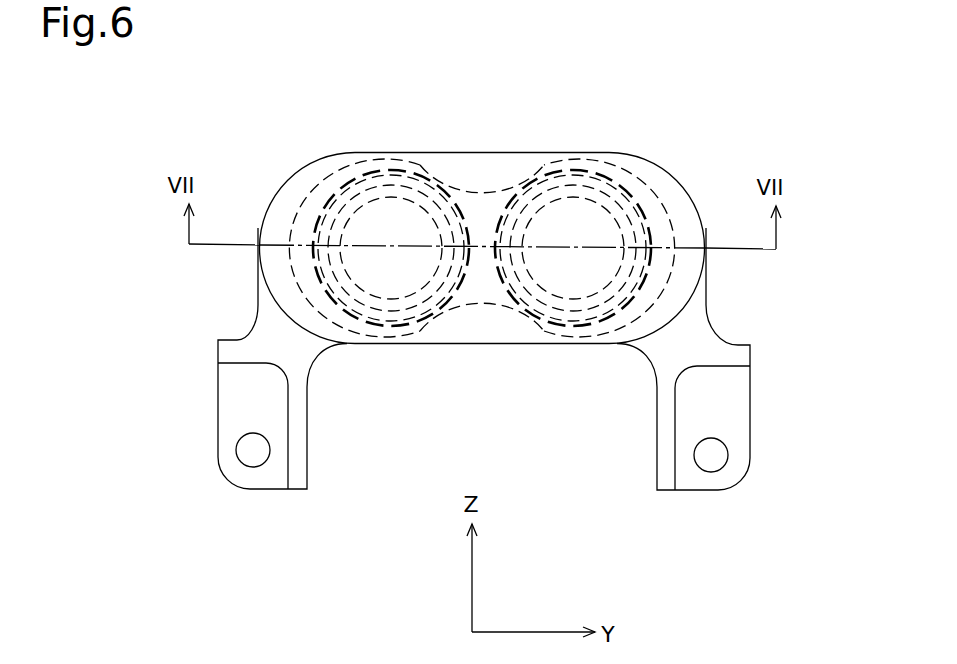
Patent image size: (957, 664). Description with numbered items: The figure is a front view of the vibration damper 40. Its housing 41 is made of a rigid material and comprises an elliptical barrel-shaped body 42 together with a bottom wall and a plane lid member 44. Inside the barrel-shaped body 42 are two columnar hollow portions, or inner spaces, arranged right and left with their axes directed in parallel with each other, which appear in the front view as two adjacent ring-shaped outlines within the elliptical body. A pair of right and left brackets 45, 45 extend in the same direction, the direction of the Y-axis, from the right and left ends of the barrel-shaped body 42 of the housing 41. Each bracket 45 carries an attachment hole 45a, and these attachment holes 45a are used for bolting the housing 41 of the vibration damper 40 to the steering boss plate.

The vibration damper 40 is at (481, 112).
The housing 41 is at (524, 142).
The elliptical barrel-shaped body 42 is at (438, 151).
The plane lid member 44 is at (479, 328).
The bracket 45 is at (275, 492).
The attachment hole 45a is at (248, 443).